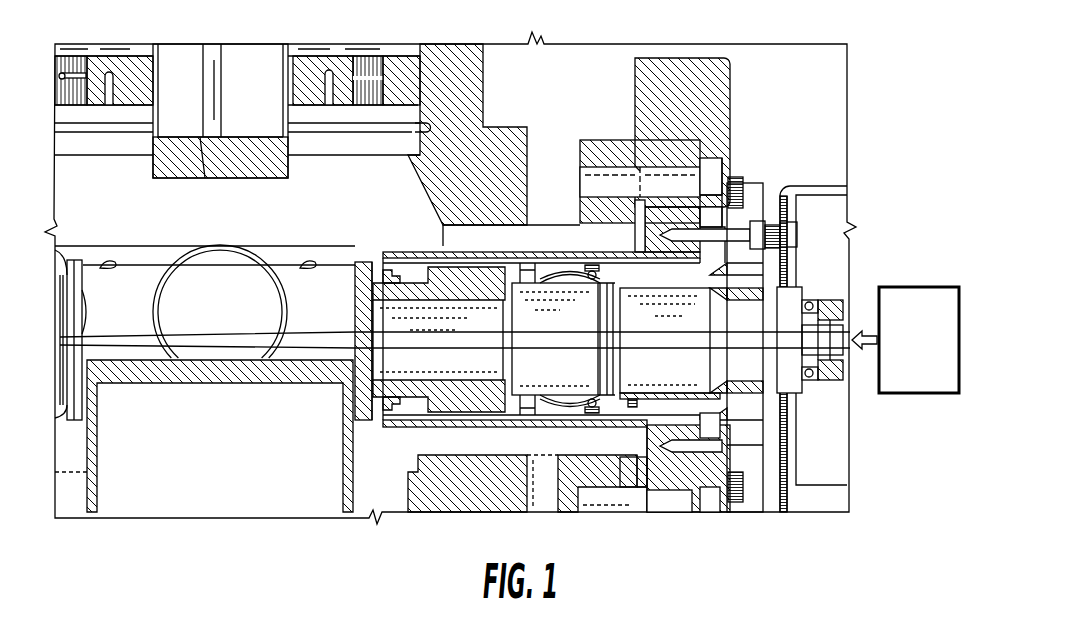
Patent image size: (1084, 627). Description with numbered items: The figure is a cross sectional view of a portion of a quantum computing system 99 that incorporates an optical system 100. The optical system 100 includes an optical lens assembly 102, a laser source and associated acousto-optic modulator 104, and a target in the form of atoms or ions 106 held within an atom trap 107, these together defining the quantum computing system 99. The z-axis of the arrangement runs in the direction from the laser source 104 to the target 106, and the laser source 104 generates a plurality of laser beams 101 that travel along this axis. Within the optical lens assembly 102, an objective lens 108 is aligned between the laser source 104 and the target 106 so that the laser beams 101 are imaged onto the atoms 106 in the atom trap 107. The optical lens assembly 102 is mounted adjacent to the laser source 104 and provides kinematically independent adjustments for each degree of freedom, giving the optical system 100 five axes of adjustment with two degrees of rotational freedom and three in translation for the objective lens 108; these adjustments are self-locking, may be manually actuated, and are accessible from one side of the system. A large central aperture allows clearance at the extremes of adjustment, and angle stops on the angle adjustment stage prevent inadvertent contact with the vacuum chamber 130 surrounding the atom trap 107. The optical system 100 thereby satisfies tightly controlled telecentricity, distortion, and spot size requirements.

The quantum computing system 99 is at (578, 95).
The optical system 100 is at (752, 203).
The laser beams 101 is at (650, 345).
The optical lens assembly 102 is at (446, 436).
The laser source and associated acousto-optic modulator (AOM) 104 is at (895, 287).
The target (atoms/ions) 106 is at (215, 340).
The atom trap 107 is at (254, 374).
The objective lens 108 is at (392, 397).
The vacuum chamber 130 is at (753, 440).